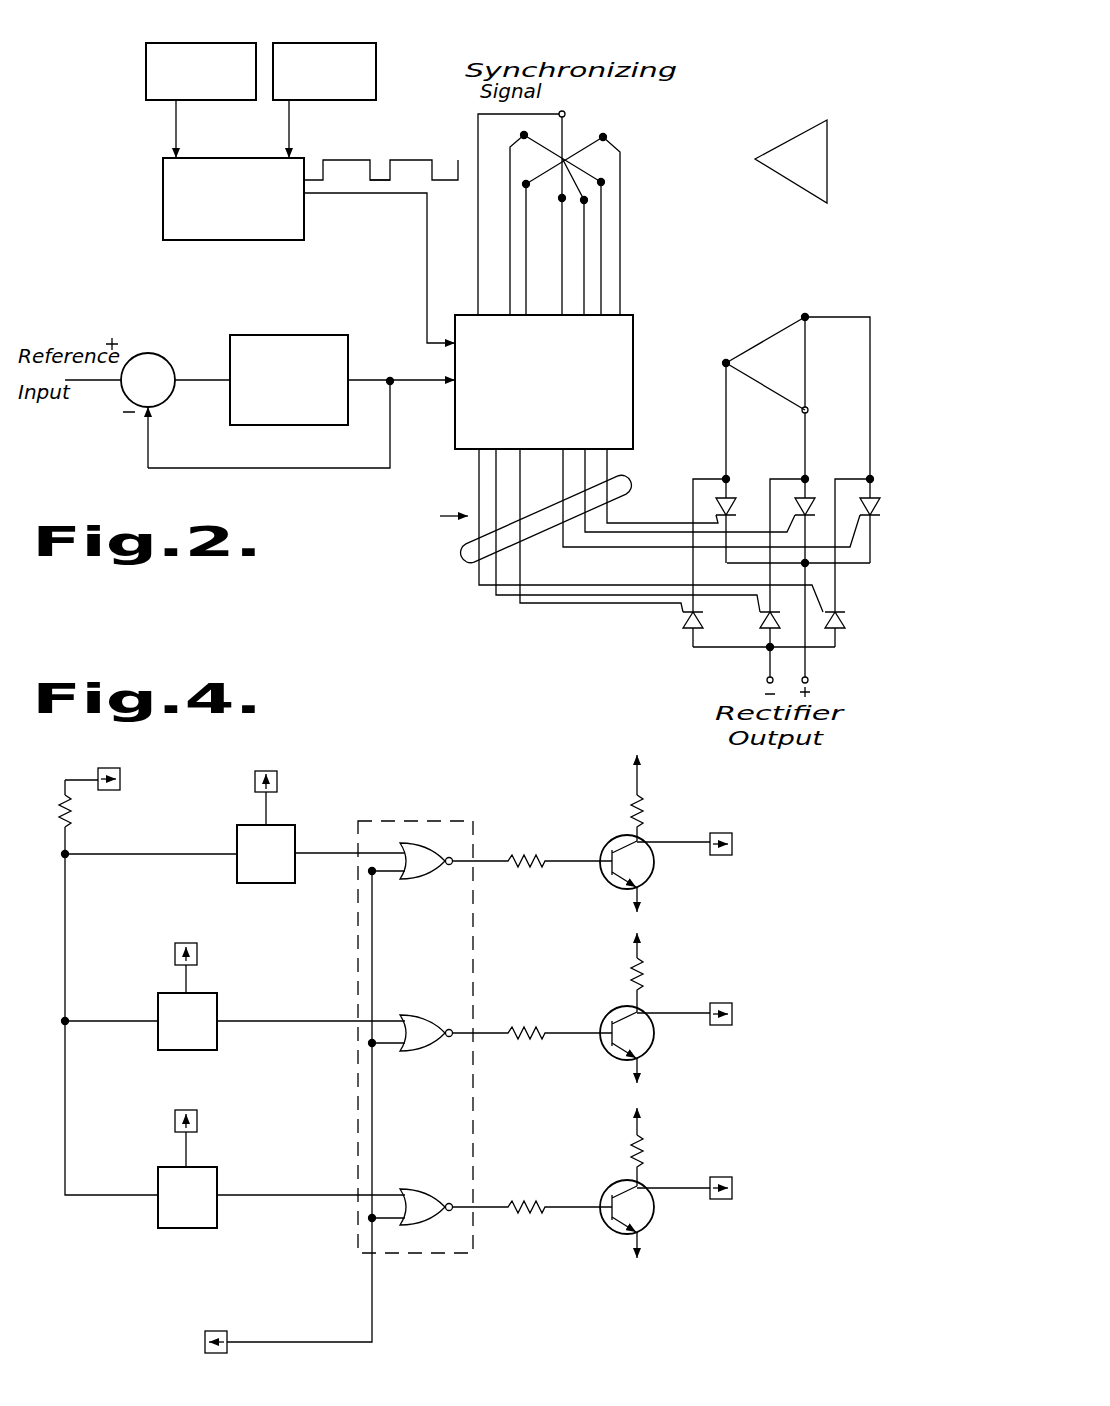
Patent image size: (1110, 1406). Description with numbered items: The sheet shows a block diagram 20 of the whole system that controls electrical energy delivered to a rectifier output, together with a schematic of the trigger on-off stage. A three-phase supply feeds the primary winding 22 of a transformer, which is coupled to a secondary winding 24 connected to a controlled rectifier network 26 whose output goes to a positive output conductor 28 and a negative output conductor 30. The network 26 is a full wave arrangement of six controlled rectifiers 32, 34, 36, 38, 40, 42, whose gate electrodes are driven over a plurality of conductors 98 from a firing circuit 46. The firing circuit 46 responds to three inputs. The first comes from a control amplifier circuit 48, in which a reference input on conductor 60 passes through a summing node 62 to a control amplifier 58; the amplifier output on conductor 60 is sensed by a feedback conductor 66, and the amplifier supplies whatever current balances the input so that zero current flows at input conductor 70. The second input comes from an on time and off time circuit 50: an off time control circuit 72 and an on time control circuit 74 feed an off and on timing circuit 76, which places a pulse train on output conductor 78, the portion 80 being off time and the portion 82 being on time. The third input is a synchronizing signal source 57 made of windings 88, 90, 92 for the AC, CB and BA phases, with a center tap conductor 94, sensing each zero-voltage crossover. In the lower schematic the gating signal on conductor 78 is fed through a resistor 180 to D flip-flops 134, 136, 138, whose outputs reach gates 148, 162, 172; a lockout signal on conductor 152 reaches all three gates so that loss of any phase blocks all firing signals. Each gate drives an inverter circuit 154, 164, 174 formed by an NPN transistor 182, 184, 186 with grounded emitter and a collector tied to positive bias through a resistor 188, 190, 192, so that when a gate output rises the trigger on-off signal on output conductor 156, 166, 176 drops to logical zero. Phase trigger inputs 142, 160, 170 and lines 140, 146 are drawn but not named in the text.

In FIG. 2, the block diagram 20 is at (651, 267).
In FIG. 2, the primary winding 22 is at (837, 164).
In FIG. 2, the secondary winding 24 is at (733, 352).
In FIG. 2, the controlled rectifier network 26 is at (891, 500).
In FIG. 2, the positive output conductor 28 is at (808, 669).
In FIG. 2, the negative output conductor 30 is at (765, 665).
In FIG. 2, the controlled rectifier 32 is at (738, 500).
In FIG. 2, the controlled rectifier 34 is at (812, 500).
In FIG. 2, the controlled rectifier 36 is at (881, 515).
In FIG. 2, the controlled rectifier 38 is at (686, 629).
In FIG. 2, the controlled rectifier 40 is at (760, 629).
In FIG. 2, the controlled rectifier 42 is at (846, 628).
In FIG. 2, the firing circuit 46 is at (633, 417).
In FIG. 2, the control amplifier circuit 48 is at (137, 444).
In FIG. 2, the on time and off time circuit 50 is at (145, 237).
In FIG. 2, the synchronizing signal source 57 is at (630, 139).
In FIG. 2, the control amplifier 58 is at (272, 426).
In FIG. 2, the conductor 60 is at (100, 384).
In FIG. 2, the summing node 62 is at (162, 403).
In FIG. 2, the feedback conductor 66 is at (248, 469).
In FIG. 2, the input conductor 70 is at (191, 378).
In FIG. 2, the off time control circuit 72 is at (217, 20).
In FIG. 2, the on time control circuit 74 is at (340, 20).
In FIG. 2, the off and on timing circuit 76 is at (163, 184).
In FIG. 2, the output conductor 78 is at (427, 224).
In FIG. 4, the output conductor 78 is at (70, 780).
In FIG. 2, the off time portion 80 is at (352, 159).
In FIG. 2, the on time portion 82 is at (377, 178).
In FIG. 2, the winding 88 is at (582, 149).
In FIG. 2, the winding 90 is at (588, 171).
In FIG. 2, the winding 92 is at (567, 119).
In FIG. 2, the center tap conductor 94 is at (588, 215).
In FIG. 2, the conductors 98 is at (462, 554).
In FIG. 4, the D flip-flop 134 is at (237, 870).
In FIG. 4, the D flip-flop 136 is at (218, 1000).
In FIG. 4, the D flip-flop 138 is at (218, 1183).
In FIG. 4, the clock input line 140 is at (112, 853).
In FIG. 4, the phase A trigger input 142 is at (266, 803).
In FIG. 4, the flip-flop output line 146 is at (325, 854).
In FIG. 4, the gate 148 is at (423, 879).
In FIG. 4, the conductor 152 is at (372, 1291).
In FIG. 4, the inverter circuit 154 is at (600, 832).
In FIG. 4, the output conductor 156 is at (669, 841).
In FIG. 4, the phase B trigger input 160 is at (183, 973).
In FIG. 4, the gate 162 is at (426, 1016).
In FIG. 4, the inverter circuit 164 is at (600, 1002).
In FIG. 4, the output conductor 166 is at (671, 1013).
In FIG. 4, the phase C trigger input 170 is at (183, 1146).
In FIG. 4, the gate 172 is at (422, 1189).
In FIG. 4, the inverter circuit 174 is at (598, 1180).
In FIG. 4, the output conductor 176 is at (678, 1187).
In FIG. 4, the resistor 180 is at (58, 813).
In FIG. 4, the NPN transistor 182 is at (649, 877).
In FIG. 4, the NPN transistor 184 is at (647, 1047).
In FIG. 4, the NPN transistor 186 is at (650, 1225).
In FIG. 4, the resistor 188 is at (633, 809).
In FIG. 4, the resistor 190 is at (641, 985).
In FIG. 4, the resistor 192 is at (643, 1160).